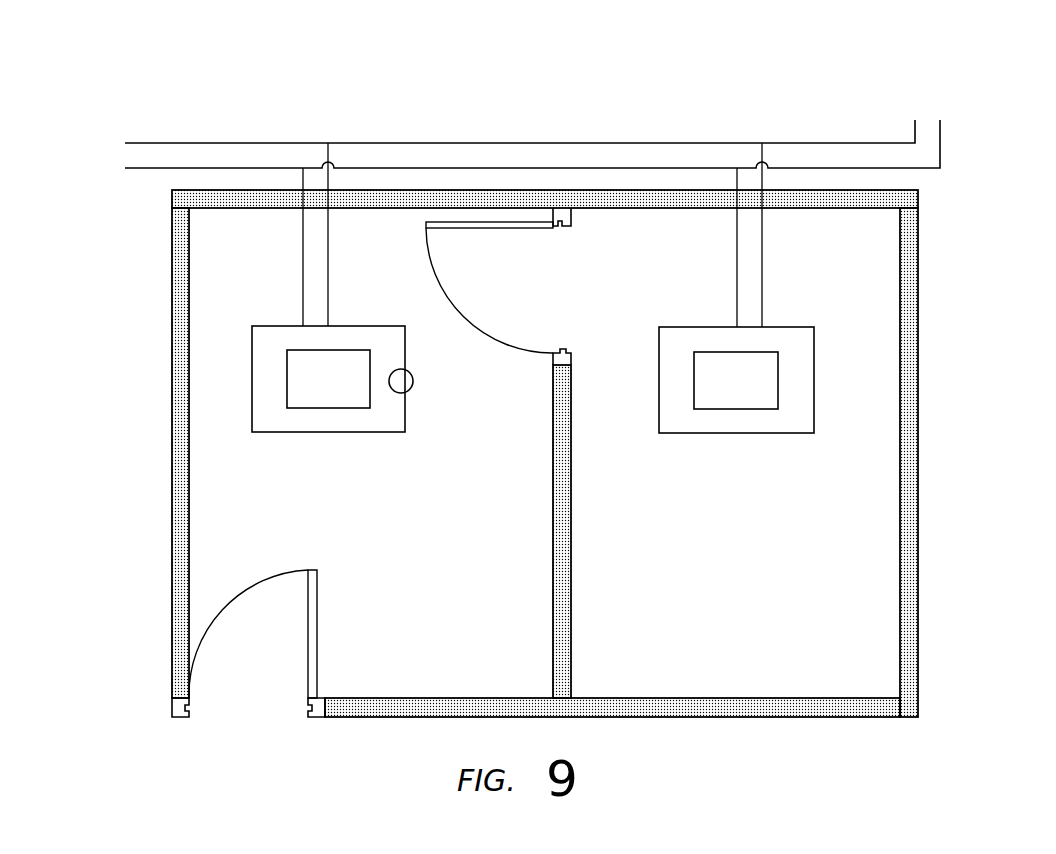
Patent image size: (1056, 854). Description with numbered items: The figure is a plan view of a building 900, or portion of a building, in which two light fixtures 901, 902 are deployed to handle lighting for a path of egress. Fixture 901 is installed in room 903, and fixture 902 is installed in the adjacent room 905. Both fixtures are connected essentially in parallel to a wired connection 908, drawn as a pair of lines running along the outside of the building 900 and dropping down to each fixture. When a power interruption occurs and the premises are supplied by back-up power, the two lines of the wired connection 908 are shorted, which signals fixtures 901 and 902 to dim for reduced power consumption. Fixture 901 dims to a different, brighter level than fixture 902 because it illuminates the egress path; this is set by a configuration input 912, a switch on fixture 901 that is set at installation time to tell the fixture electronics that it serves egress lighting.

The building 900 is at (918, 605).
The light fixture 901 is at (282, 432).
The light fixture 902 is at (762, 433).
The room 903 is at (503, 602).
The room 905 is at (805, 594).
The wired connection 908 is at (602, 144).
The configuration input 912 is at (421, 360).